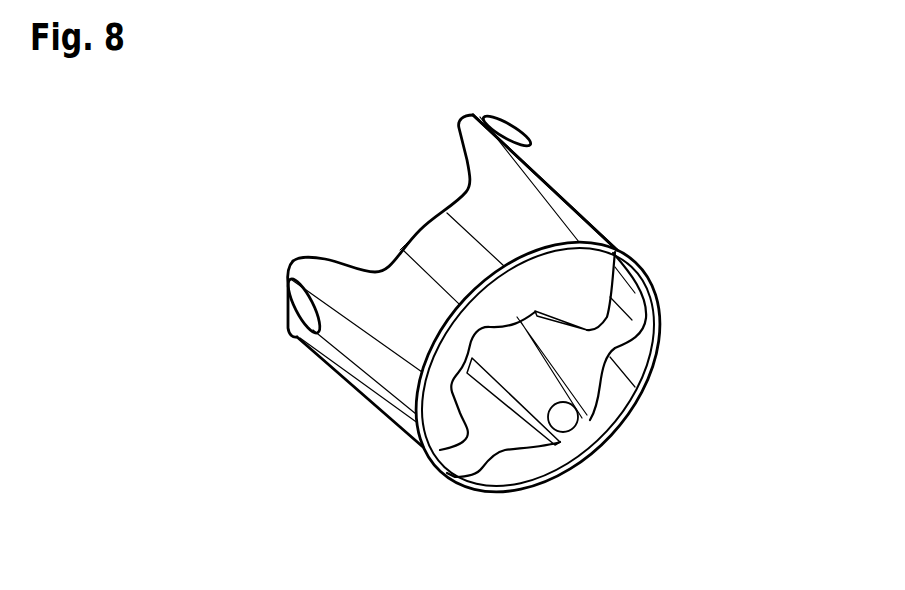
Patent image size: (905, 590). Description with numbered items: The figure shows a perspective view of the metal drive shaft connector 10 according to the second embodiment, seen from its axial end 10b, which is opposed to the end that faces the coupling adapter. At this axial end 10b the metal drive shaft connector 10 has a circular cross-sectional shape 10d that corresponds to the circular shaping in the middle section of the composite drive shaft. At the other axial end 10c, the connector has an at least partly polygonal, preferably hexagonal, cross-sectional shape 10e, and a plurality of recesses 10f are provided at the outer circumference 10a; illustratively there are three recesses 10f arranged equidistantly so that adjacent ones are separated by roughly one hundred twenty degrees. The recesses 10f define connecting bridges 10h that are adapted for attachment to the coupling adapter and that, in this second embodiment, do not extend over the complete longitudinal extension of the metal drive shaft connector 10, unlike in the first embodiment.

The metal drive shaft connector 10 is at (657, 155).
The outer circumference 10a is at (560, 175).
The axial end 10b is at (623, 427).
The axial end 10c is at (293, 261).
The circular cross-sectional shape 10d is at (570, 473).
The cross-sectional shape 10e is at (352, 294).
The recess 10f is at (418, 230).
The connecting bridge 10h is at (472, 135).